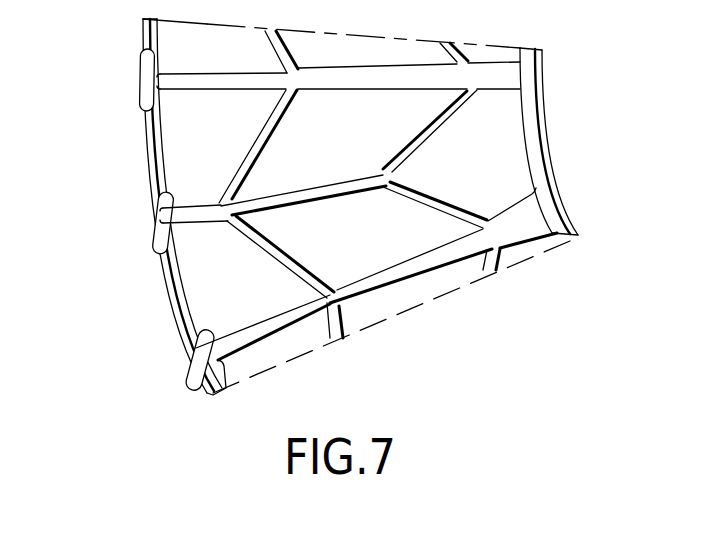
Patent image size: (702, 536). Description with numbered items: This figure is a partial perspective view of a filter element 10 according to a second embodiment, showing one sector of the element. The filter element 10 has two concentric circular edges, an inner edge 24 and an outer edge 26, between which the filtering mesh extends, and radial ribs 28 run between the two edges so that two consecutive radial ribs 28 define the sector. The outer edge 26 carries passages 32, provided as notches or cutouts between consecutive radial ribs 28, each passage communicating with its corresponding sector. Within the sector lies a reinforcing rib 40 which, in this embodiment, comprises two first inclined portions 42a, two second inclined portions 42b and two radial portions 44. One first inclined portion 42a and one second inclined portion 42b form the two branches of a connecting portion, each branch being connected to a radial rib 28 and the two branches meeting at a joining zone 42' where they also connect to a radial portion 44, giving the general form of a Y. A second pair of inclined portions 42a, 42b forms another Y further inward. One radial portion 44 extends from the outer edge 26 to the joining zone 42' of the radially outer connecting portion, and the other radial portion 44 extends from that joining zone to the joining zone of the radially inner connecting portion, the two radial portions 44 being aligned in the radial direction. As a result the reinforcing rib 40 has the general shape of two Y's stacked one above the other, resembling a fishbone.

The filter element 10 is at (104, 300).
The inner edge 24 is at (532, 142).
The outer edge 26 is at (157, 236).
The radial ribs 28 is at (495, 82).
The passages 32 is at (148, 157).
The reinforcing rib 40 is at (213, 278).
The joining zone 42' is at (338, 117).
The first inclined portion 42a is at (432, 116).
The second inclined portion 42b is at (422, 203).
The radial portion 44 is at (189, 217).